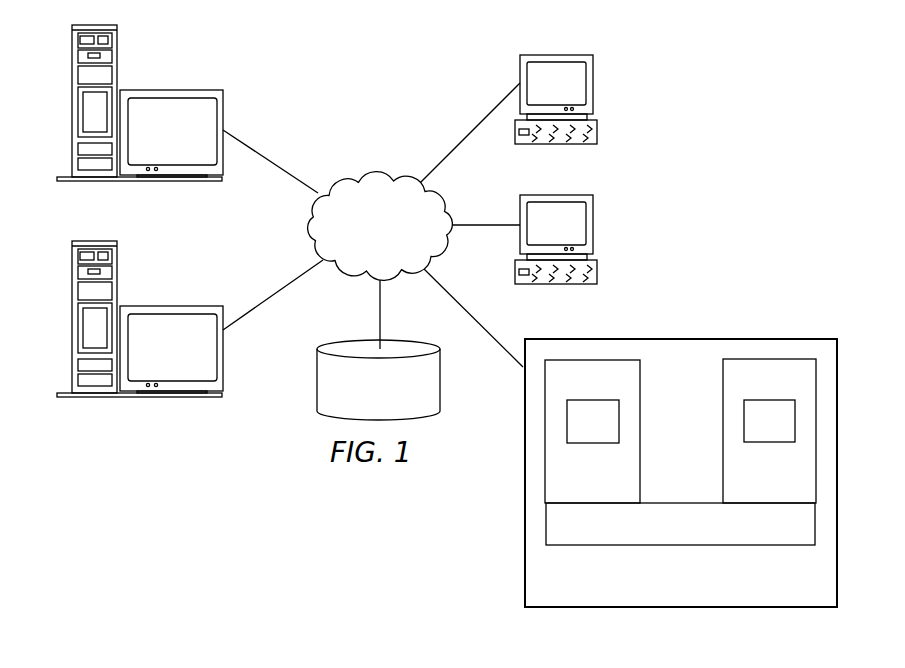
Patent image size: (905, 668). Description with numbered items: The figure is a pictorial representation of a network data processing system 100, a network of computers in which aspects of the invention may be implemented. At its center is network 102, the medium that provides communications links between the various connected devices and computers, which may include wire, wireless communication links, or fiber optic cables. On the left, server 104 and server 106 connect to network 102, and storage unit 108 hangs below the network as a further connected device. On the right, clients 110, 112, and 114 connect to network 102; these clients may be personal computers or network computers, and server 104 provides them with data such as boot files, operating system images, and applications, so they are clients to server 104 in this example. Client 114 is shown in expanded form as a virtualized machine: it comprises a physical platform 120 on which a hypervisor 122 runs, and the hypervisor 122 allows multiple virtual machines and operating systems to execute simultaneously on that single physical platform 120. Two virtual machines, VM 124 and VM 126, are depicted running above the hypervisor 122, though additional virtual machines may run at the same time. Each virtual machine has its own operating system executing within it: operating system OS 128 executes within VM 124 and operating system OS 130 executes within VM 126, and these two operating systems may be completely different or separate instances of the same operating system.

The network data processing system 100 is at (318, 64).
The network 102 is at (350, 176).
The server 104 is at (72, 104).
The server 106 is at (72, 320).
The storage unit 108 is at (317, 388).
The client 110 is at (593, 85).
The client 112 is at (593, 225).
The client 114 is at (651, 441).
The physical platform 120 is at (525, 573).
The hypervisor 122 is at (678, 503).
The virtual machine 124 is at (640, 387).
The virtual machine 126 is at (723, 410).
The operating system 128 is at (593, 443).
The operating system 130 is at (770, 442).